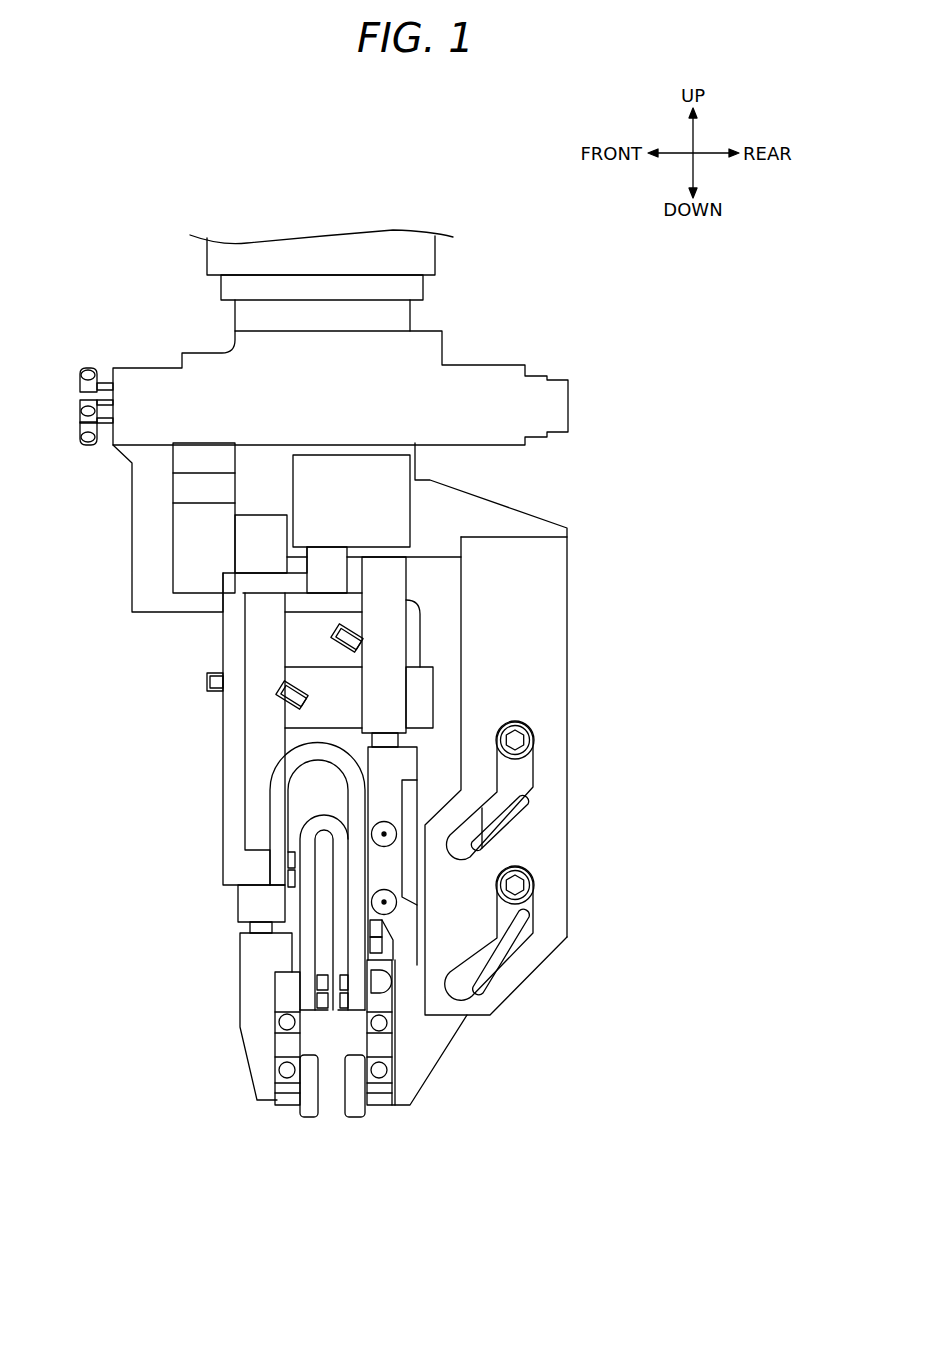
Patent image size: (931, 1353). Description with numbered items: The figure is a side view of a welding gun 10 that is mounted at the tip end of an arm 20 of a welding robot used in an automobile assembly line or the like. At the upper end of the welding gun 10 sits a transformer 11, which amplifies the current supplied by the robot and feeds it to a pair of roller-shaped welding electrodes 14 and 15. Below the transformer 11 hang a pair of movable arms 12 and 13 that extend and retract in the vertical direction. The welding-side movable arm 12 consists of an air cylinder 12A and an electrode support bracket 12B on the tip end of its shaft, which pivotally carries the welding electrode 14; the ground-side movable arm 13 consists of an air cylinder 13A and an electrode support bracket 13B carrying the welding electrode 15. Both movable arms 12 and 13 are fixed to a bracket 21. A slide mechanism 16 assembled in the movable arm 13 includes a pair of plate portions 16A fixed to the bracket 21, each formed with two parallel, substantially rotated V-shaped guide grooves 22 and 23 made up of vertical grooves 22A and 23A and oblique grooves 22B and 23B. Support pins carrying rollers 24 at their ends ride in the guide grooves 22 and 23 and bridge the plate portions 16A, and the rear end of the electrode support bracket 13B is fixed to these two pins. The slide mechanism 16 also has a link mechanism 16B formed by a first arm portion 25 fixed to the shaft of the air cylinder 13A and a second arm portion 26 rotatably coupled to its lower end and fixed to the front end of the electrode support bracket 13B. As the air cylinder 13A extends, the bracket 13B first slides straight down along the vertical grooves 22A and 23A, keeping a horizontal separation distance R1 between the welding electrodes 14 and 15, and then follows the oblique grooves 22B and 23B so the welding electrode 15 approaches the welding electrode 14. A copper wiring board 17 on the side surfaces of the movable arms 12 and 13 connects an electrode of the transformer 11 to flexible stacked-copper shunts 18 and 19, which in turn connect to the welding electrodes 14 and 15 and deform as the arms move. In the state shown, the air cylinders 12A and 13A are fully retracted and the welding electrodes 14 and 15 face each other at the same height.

The welding gun 10 is at (313, 150).
The transformer 11 is at (463, 380).
The movable arm 12 is at (192, 836).
The air cylinder 12A is at (258, 827).
The electrode support bracket 12B is at (222, 1016).
The movable arm 13 is at (528, 793).
The air cylinder 13A is at (380, 690).
The electrode support bracket 13B is at (440, 1030).
The welding electrode 14 is at (308, 1100).
The welding electrode 15 is at (354, 1100).
The slide mechanism 16 is at (542, 1066).
The plate portion 16A is at (487, 1002).
The link mechanism 16B is at (511, 1090).
The wiring board 17 is at (143, 565).
The shunt 18 is at (307, 995).
The shunt 19 is at (353, 995).
The arm 20 is at (360, 288).
The bracket 21 is at (257, 473).
The guide groove 22 is at (554, 791).
The vertical groove 22A is at (522, 775).
The oblique groove 22B is at (517, 803).
The guide groove 23 is at (554, 933).
The vertical groove 23A is at (518, 917).
The oblique groove 23B is at (515, 953).
The roller 24 is at (515, 740).
The first arm portion 25 is at (392, 807).
The second arm portion 26 is at (385, 880).
The separation distance R1 is at (278, 1198).